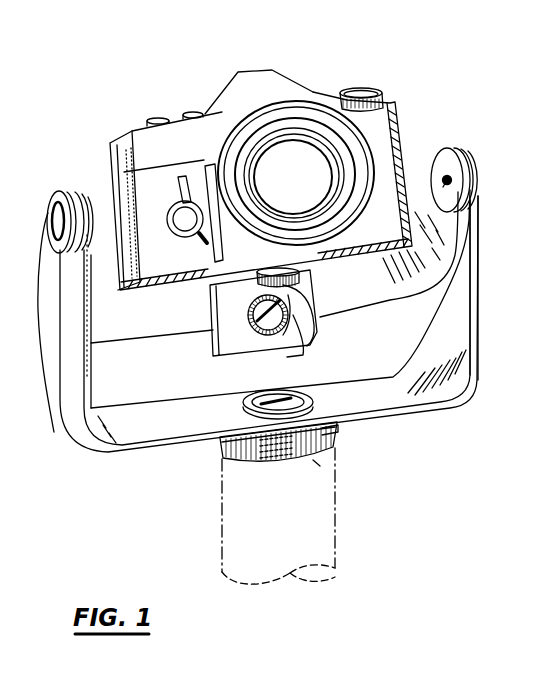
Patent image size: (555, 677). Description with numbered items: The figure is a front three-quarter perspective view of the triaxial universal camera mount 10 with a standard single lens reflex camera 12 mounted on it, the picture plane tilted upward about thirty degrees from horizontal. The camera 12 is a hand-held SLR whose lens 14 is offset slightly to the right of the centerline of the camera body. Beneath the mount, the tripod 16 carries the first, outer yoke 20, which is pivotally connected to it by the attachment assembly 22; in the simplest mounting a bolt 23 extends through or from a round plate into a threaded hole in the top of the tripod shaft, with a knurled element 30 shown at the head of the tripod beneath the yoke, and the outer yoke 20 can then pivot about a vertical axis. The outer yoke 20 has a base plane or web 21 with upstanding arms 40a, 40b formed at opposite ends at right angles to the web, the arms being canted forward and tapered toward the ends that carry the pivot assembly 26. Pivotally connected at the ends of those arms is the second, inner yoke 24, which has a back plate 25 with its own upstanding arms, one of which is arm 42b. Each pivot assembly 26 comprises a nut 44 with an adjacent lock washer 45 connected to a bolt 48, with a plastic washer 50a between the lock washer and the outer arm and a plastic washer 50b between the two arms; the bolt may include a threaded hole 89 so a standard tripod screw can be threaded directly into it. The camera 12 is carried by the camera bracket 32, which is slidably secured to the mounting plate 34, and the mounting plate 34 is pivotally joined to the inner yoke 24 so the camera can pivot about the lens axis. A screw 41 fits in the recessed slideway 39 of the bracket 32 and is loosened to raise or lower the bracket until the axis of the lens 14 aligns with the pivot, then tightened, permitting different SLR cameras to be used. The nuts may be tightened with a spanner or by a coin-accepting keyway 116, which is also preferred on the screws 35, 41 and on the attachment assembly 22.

The triaxial universal camera mount 10 is at (448, 424).
The camera 12 is at (362, 84).
The lens 14 is at (298, 182).
The tripod 16 is at (288, 557).
The outer yoke 20 is at (458, 347).
The base plane or web 21 is at (150, 436).
The attachment assembly 22 is at (262, 394).
The bolt 23 is at (313, 460).
The inner yoke 24 is at (452, 230).
The back plate 25 is at (136, 329).
The pivot assembly 26 is at (460, 136).
The knurled nut 30 is at (337, 449).
The camera bracket 32 is at (236, 318).
The mounting plate 34 is at (279, 361).
The screw 35 is at (318, 312).
The recessed slideway 39 is at (316, 360).
The upstanding arm 40a is at (70, 360).
The upstanding arm 40b is at (459, 332).
The screw 41 is at (308, 324).
The upstanding arm 42b is at (422, 197).
The nut 44 is at (50, 213).
The lock washer 45 is at (57, 201).
The bolt 48 is at (87, 188).
The washer 50a is at (67, 191).
The washer 50b is at (77, 190).
The threaded hole 89 is at (450, 177).
The keyway 116 is at (61, 335).